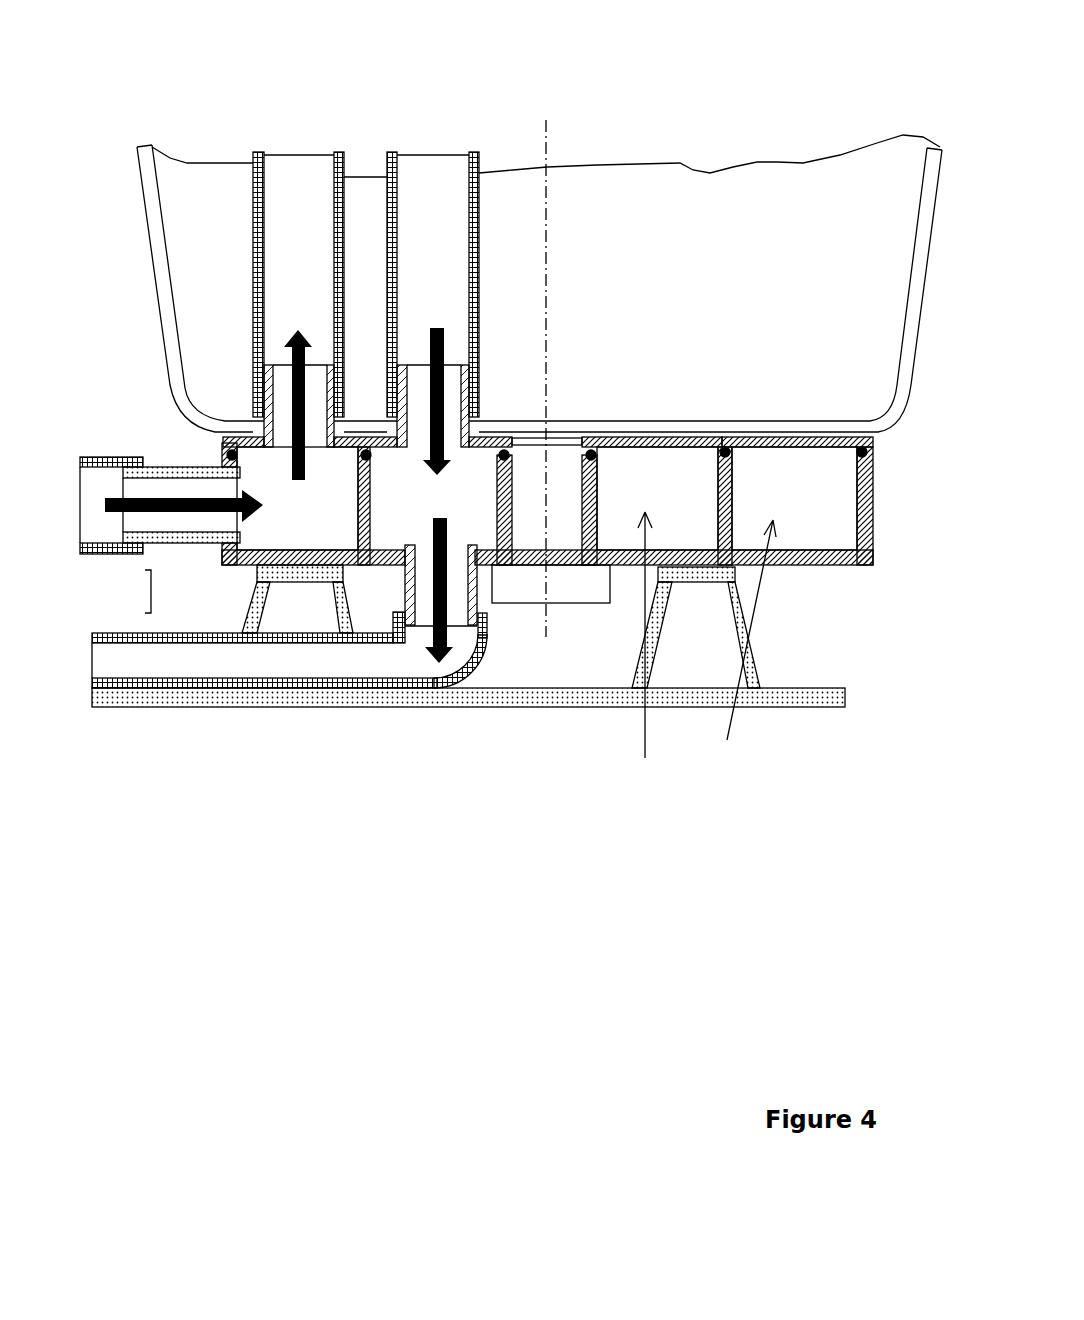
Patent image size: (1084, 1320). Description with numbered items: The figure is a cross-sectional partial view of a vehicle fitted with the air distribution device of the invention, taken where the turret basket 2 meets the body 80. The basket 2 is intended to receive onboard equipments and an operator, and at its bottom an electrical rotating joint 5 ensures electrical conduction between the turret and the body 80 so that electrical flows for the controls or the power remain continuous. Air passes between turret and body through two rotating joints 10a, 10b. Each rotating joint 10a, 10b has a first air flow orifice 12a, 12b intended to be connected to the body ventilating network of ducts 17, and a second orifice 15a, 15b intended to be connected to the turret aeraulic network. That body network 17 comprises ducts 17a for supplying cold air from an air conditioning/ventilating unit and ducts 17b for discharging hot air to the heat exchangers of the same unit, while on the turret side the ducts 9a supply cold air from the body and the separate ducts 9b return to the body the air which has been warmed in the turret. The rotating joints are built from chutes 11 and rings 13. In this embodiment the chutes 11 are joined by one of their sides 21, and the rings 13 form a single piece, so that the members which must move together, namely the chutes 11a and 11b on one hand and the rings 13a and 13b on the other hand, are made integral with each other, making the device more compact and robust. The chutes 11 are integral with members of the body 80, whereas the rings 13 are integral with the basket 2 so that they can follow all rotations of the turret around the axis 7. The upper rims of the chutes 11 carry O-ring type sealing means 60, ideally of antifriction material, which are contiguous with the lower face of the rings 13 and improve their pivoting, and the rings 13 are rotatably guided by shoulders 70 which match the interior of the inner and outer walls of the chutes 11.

The turret basket 2 is at (230, 298).
The electrical rotating joint 5 is at (578, 580).
The axis 7 is at (545, 163).
The ducts 9a is at (298, 200).
The ducts 9b is at (443, 193).
The rotating joint 10a is at (739, 659).
The rotating joint 10b is at (644, 652).
The chutes 11 is at (375, 620).
The chute 11a is at (280, 570).
The chute 11b is at (367, 573).
The first air flow orifice 12a is at (187, 483).
The first air flow orifice 12b is at (458, 600).
The rings 13 is at (674, 573).
The ring 13a is at (813, 437).
The ring 13b is at (675, 433).
The second orifice 15a is at (282, 395).
The second orifice 15b is at (455, 390).
The body ventilating network of ducts 17 is at (289, 577).
The ducts 17a is at (103, 513).
The ducts 17b is at (113, 662).
The sides 21 is at (347, 505).
The sealing means 60 is at (870, 430).
The shoulders 70 is at (507, 433).
The body 80 is at (705, 583).